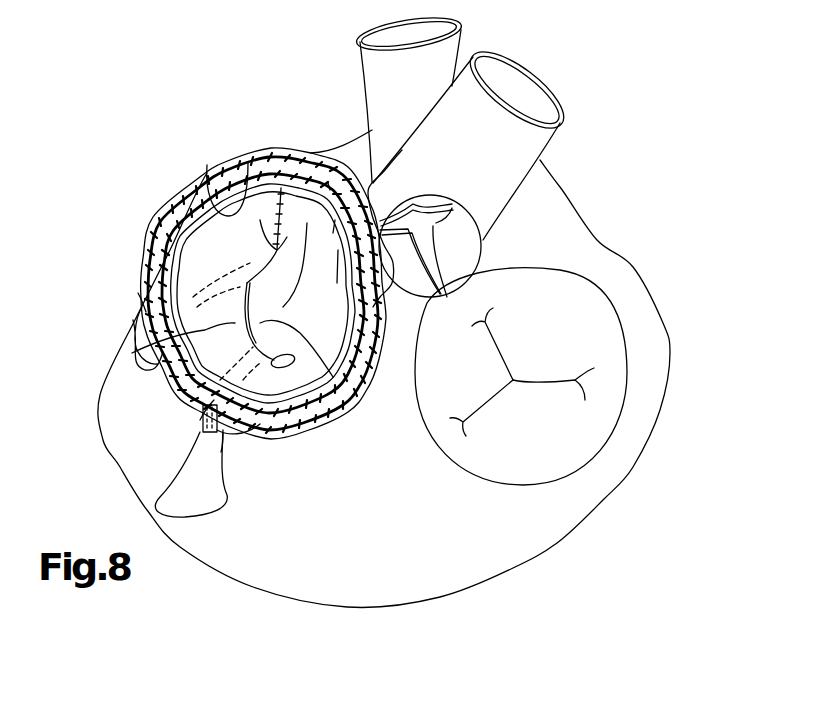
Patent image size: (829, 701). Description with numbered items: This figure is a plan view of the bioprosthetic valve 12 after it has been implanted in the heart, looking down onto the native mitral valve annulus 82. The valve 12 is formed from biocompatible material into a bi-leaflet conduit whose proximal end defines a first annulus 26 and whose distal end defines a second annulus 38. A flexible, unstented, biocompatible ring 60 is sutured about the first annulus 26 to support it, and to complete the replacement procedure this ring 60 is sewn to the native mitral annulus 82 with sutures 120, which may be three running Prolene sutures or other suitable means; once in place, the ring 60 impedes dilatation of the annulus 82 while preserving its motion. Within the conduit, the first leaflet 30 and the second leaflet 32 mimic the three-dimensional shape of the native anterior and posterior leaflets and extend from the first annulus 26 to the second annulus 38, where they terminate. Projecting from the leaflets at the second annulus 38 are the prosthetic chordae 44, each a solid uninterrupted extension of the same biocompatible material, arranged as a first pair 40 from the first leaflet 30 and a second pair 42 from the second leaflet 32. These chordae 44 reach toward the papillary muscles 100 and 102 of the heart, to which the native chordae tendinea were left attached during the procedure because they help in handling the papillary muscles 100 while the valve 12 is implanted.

The bioprosthetic valve 12 is at (242, 127).
The first annulus 26 is at (268, 190).
The first leaflet 30 is at (132, 353).
The second leaflet 32 is at (307, 223).
The second annulus 38 is at (300, 333).
The first pair of prosthetic chordae 40 is at (203, 422).
The second pair of prosthetic chordae 42 is at (227, 433).
The prosthetic chordae 44 is at (200, 422).
The ring 60 is at (155, 212).
The valve annulus 82 is at (207, 165).
The papillary muscle 100 is at (133, 320).
The papillary muscle 102 is at (207, 455).
The sutures 120 is at (138, 293).